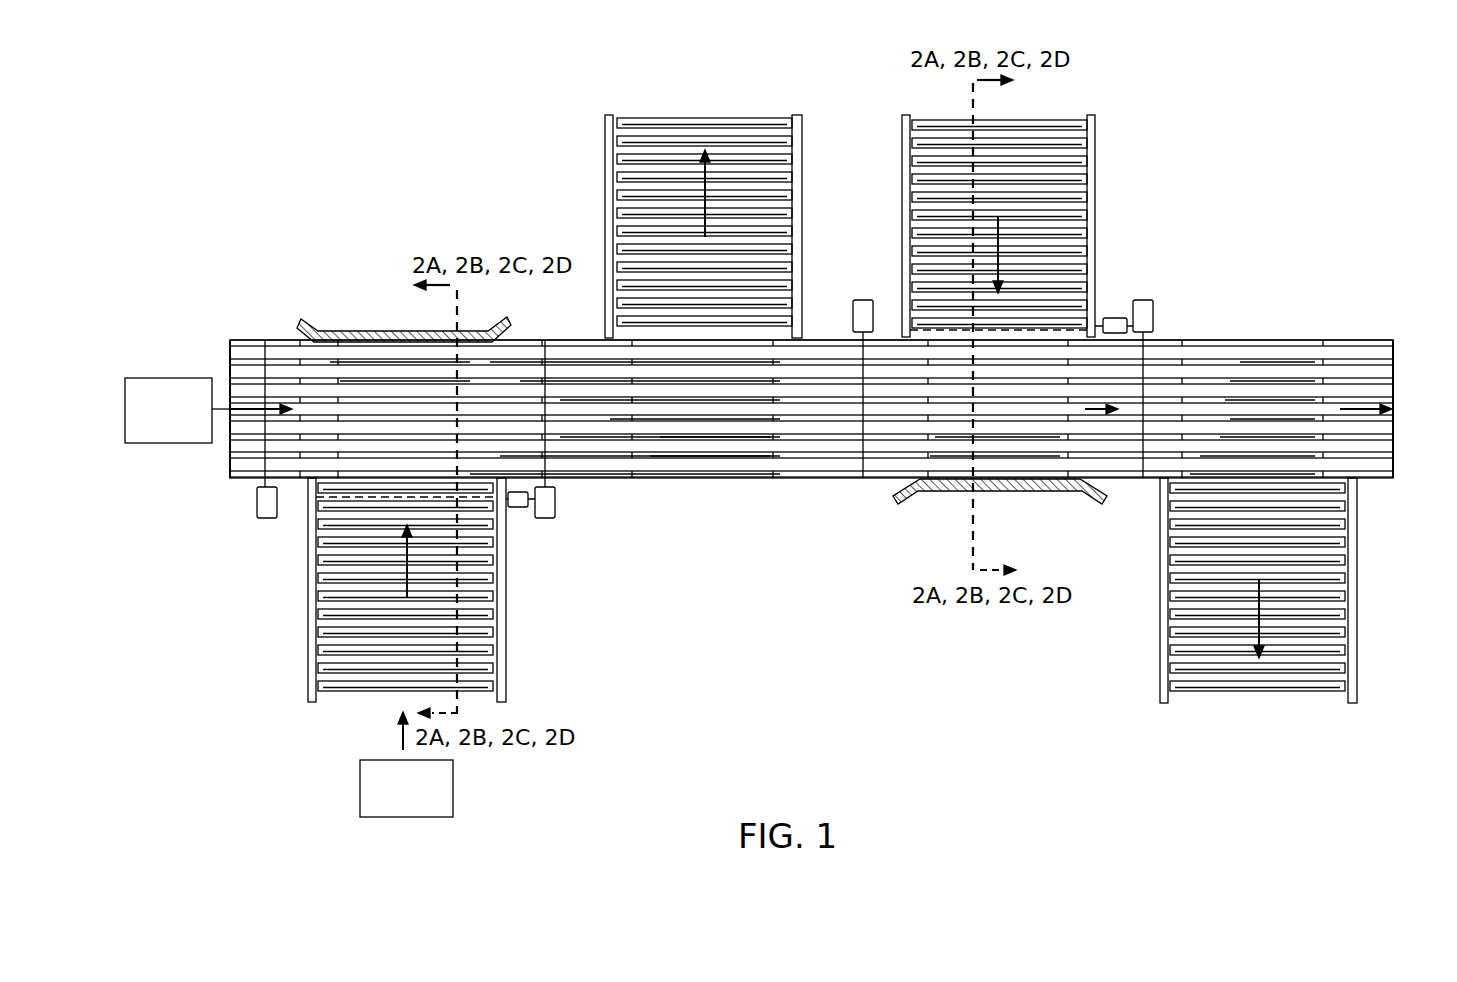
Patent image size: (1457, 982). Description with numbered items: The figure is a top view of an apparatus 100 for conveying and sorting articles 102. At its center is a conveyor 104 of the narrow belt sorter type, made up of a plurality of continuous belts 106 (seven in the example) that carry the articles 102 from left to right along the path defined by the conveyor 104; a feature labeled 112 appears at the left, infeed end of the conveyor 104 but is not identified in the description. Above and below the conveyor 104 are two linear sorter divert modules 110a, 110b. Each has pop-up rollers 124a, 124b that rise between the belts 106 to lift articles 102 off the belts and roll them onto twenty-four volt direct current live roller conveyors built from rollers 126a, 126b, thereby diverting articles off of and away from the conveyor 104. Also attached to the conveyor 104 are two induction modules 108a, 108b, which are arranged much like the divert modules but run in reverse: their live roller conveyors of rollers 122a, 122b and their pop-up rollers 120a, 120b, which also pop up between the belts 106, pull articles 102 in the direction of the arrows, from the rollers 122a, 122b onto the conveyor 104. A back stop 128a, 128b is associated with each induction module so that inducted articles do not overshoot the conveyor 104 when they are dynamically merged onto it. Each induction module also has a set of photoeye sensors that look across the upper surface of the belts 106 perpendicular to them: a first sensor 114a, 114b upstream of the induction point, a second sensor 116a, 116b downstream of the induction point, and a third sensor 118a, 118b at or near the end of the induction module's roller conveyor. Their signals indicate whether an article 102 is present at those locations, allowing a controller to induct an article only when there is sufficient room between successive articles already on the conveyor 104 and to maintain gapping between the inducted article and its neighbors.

The apparatus 100 is at (1132, 57).
The articles 102 is at (289, 597).
The conveyor 104 is at (1213, 338).
The continuous belts 106 is at (1385, 372).
The induction module 108a is at (443, 620).
The induction module 108b is at (1041, 222).
The linear sorter divert module 110a is at (661, 197).
The linear sorter divert module 110b is at (1216, 615).
The infeed end of main conveyor 112 is at (237, 338).
The first sensor 114a is at (257, 497).
The first sensor 114b is at (862, 300).
The second sensor 116a is at (556, 500).
The second sensor 116b is at (1141, 300).
The third sensor 118a is at (515, 507).
The third sensor 118b is at (1111, 318).
The pop-up rollers 120a is at (408, 378).
The pop-up rollers 120b is at (942, 492).
The rollers 122a is at (345, 700).
The rollers 122b is at (1095, 121).
The pop-up rollers 124a is at (741, 480).
The pop-up rollers 124b is at (1303, 365).
The rollers 126a is at (648, 122).
The rollers 126b is at (1272, 695).
The back stop 128a is at (505, 318).
The back stop 128b is at (1100, 500).